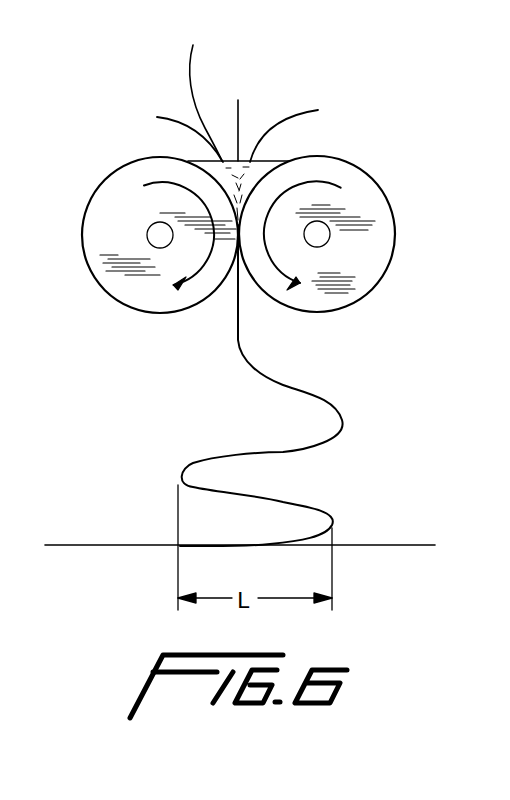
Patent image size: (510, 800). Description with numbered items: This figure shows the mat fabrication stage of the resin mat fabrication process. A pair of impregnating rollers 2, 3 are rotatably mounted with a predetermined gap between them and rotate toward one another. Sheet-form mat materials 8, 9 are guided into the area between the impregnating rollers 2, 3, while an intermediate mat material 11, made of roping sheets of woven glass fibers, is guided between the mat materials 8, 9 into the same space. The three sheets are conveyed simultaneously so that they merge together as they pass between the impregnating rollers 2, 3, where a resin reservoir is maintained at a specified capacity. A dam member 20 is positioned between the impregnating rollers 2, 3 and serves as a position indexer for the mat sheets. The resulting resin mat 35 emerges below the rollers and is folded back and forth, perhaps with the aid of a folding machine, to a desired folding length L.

The impregnating roller 2 is at (110, 273).
The impregnating roller 3 is at (348, 288).
The mat material 8 is at (170, 117).
The mat material 9 is at (310, 110).
The intermediate mat material 11 is at (238, 110).
The dam member 20 is at (204, 91).
The resin mat 35 is at (190, 468).